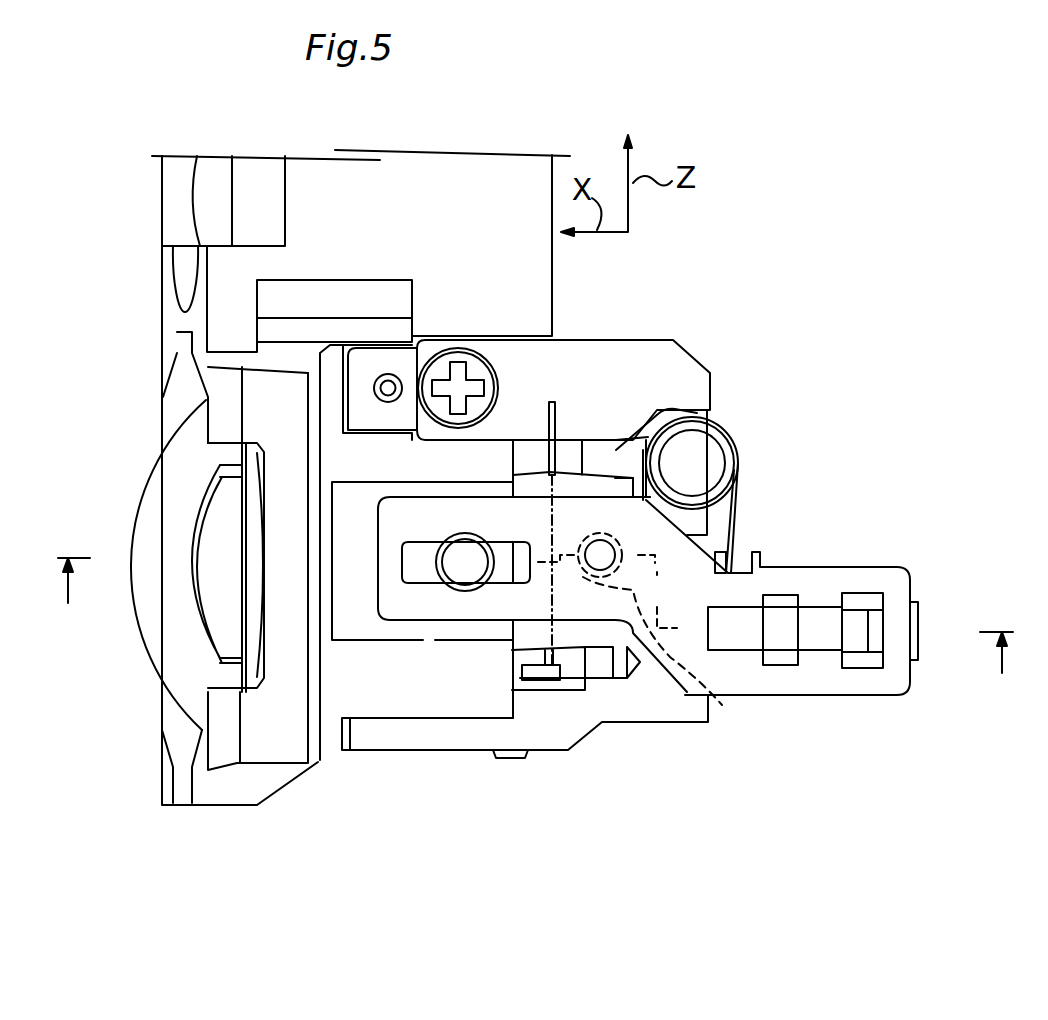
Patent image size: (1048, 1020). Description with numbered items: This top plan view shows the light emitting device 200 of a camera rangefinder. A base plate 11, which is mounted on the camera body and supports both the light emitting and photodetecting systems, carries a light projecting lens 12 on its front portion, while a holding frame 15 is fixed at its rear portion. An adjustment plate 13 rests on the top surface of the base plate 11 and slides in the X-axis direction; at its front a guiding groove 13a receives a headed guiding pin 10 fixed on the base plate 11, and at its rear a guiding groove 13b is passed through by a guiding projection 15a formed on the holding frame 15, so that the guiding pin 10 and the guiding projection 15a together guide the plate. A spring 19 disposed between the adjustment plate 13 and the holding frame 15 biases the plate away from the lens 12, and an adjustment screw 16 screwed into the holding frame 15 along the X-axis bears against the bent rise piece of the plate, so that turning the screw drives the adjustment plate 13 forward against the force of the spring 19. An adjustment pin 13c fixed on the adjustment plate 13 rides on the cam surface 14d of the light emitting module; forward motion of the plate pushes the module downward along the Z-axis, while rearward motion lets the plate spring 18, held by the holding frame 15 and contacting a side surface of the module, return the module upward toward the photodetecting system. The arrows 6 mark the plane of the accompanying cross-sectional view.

The optical pickup assembly 200 is at (465, 80).
The guiding pin 10 is at (466, 576).
The base plate 11 is at (475, 676).
The light projecting lens 12 is at (182, 643).
The adjustment plate 13 is at (805, 580).
The guiding groove 13a is at (420, 570).
The guiding groove 13b is at (825, 635).
The adjustment pin 13c is at (598, 538).
The cam surface 14d is at (722, 705).
The holding frame 15 is at (668, 350).
The guiding projection 15a is at (785, 610).
The adjustment screw 16 is at (952, 607).
The plate spring 18 is at (567, 690).
The spring 19 is at (727, 432).
The section line 6 is at (535, 635).